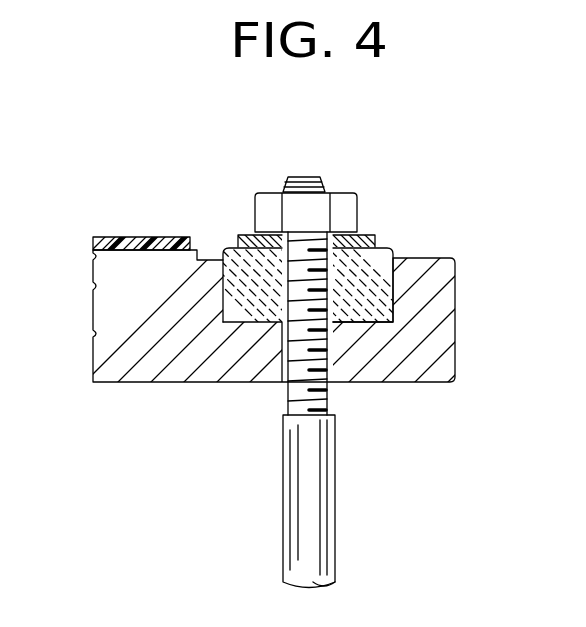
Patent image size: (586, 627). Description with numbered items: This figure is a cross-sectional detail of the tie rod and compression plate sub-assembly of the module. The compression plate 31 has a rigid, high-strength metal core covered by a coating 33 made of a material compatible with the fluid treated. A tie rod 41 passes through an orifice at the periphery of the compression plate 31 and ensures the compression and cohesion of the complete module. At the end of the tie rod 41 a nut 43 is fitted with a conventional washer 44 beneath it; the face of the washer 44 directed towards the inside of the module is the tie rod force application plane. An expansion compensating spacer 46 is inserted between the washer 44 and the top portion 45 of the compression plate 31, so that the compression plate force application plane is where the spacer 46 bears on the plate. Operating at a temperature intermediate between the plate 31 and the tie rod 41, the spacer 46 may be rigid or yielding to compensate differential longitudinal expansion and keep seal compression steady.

The compression plate 31 is at (127, 332).
The coating 33 is at (128, 238).
The tie rod 41 is at (312, 528).
The nut 43 is at (268, 213).
The washer 44 is at (365, 233).
The top portion of the compression plate 45 is at (372, 322).
The expansion compensating spacer 46 is at (372, 290).